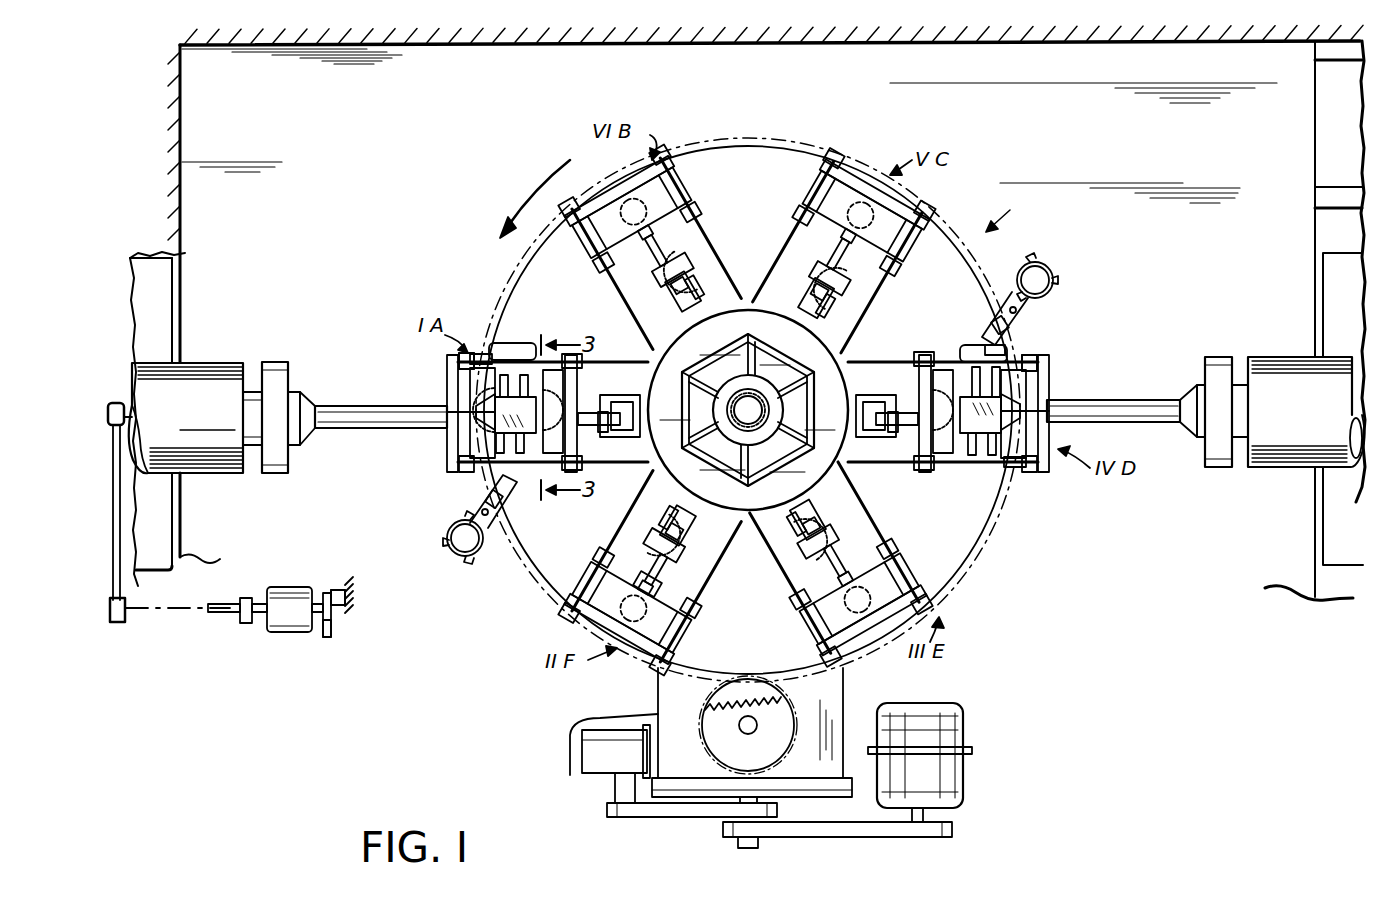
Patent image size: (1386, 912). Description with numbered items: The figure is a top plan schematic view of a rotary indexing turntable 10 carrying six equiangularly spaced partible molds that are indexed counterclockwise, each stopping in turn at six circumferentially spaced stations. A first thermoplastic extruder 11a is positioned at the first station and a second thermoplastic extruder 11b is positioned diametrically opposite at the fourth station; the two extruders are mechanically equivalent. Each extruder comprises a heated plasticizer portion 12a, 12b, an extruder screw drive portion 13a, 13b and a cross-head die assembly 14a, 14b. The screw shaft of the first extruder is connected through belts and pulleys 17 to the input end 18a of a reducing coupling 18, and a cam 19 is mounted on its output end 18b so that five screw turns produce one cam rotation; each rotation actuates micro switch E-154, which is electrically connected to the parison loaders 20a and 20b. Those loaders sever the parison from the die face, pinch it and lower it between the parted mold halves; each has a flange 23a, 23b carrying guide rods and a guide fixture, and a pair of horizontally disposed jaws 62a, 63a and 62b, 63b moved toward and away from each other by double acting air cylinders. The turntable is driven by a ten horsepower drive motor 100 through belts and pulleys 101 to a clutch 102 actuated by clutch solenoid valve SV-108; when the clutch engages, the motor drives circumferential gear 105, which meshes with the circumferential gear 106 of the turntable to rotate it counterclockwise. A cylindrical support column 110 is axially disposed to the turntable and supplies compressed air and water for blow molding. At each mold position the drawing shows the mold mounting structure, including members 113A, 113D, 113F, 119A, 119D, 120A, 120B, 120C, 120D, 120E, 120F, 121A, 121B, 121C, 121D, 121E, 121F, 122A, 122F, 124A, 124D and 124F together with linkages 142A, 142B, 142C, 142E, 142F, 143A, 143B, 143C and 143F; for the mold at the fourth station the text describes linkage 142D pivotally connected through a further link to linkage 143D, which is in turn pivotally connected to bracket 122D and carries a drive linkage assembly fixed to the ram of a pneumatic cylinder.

The rotary indexing turntable 10 is at (1011, 210).
The first thermoplastic extruder 11a is at (280, 348).
The second thermoplastic extruder 11b is at (1236, 345).
The plasticizer portion 12a is at (195, 364).
The plasticizer portion 12b is at (1300, 343).
The extruder screw drive portion 13a is at (318, 404).
The extruder screw drive portion 13b is at (1192, 434).
The cross-head die assembly 14a is at (516, 360).
The cross-head die assembly 14b is at (1030, 466).
The belts and pulleys 17 is at (162, 622).
The reducing coupling 18 is at (288, 587).
The input end 18a is at (255, 598).
The output end 18b is at (326, 594).
The cam 19 is at (331, 630).
The micro switch E-154 is at (352, 597).
The parison loader 20a is at (446, 470).
The parison loader 20b is at (1058, 316).
The flange 23a is at (444, 537).
The flange 23b is at (1018, 278).
The jaw 62a is at (522, 472).
The jaw 62b is at (1010, 430).
The jaw 63a is at (476, 470).
The jaw 63b is at (1045, 400).
The drive motor 100 is at (968, 760).
The belts and pulleys 101 is at (822, 842).
The clutch 102 is at (618, 796).
The circumferential gear 105 is at (705, 698).
The circumferential gear of turntable 106 is at (845, 690).
The clutch solenoid valve SV-108 is at (600, 770).
The cylindrical support column 110 is at (770, 412).
The end block station A 113A is at (470, 381).
The end block station D 113D is at (1040, 380).
The end block station F 113F is at (582, 622).
The end plate station A 119A is at (452, 360).
The end plate station D 119D is at (1050, 368).
The chuck station A 120A is at (528, 358).
The chuck station B 120B is at (655, 200).
The chuck station C 120C is at (845, 190).
The chuck station D 120D is at (972, 378).
The chuck station E 120E is at (925, 588).
The chuck station F 120F is at (592, 580).
The guide rails station A 121A is at (450, 458).
The guide rails station B 121B is at (668, 172).
The guide rails station C 121C is at (870, 168).
The guide rails station D 121D is at (1038, 360).
The guide rails station E 121E is at (930, 603).
The guide rails station F 121F is at (578, 600).
The slide plate station A 122A is at (556, 370).
The bracket 122D is at (936, 372).
The slide plate station F 122F is at (680, 612).
The cross bar station A 124A is at (586, 426).
The cross bar station D 124D is at (922, 468).
The cross bar station F 124F is at (700, 556).
The gripper assembly station A 142A is at (604, 402).
The gripper assembly station B 142B is at (692, 290).
The gripper assembly station C 142C is at (816, 268).
The linkage 142D is at (880, 400).
The gripper assembly station E 142E is at (840, 520).
The gripper assembly station F 142F is at (672, 520).
The clamp nut station A 143A is at (594, 474).
The clamp nut station B 143B is at (610, 268).
The clamp nut station C 143C is at (805, 252).
The linkage 143D is at (923, 352).
The clamp nut station F 143F is at (600, 575).